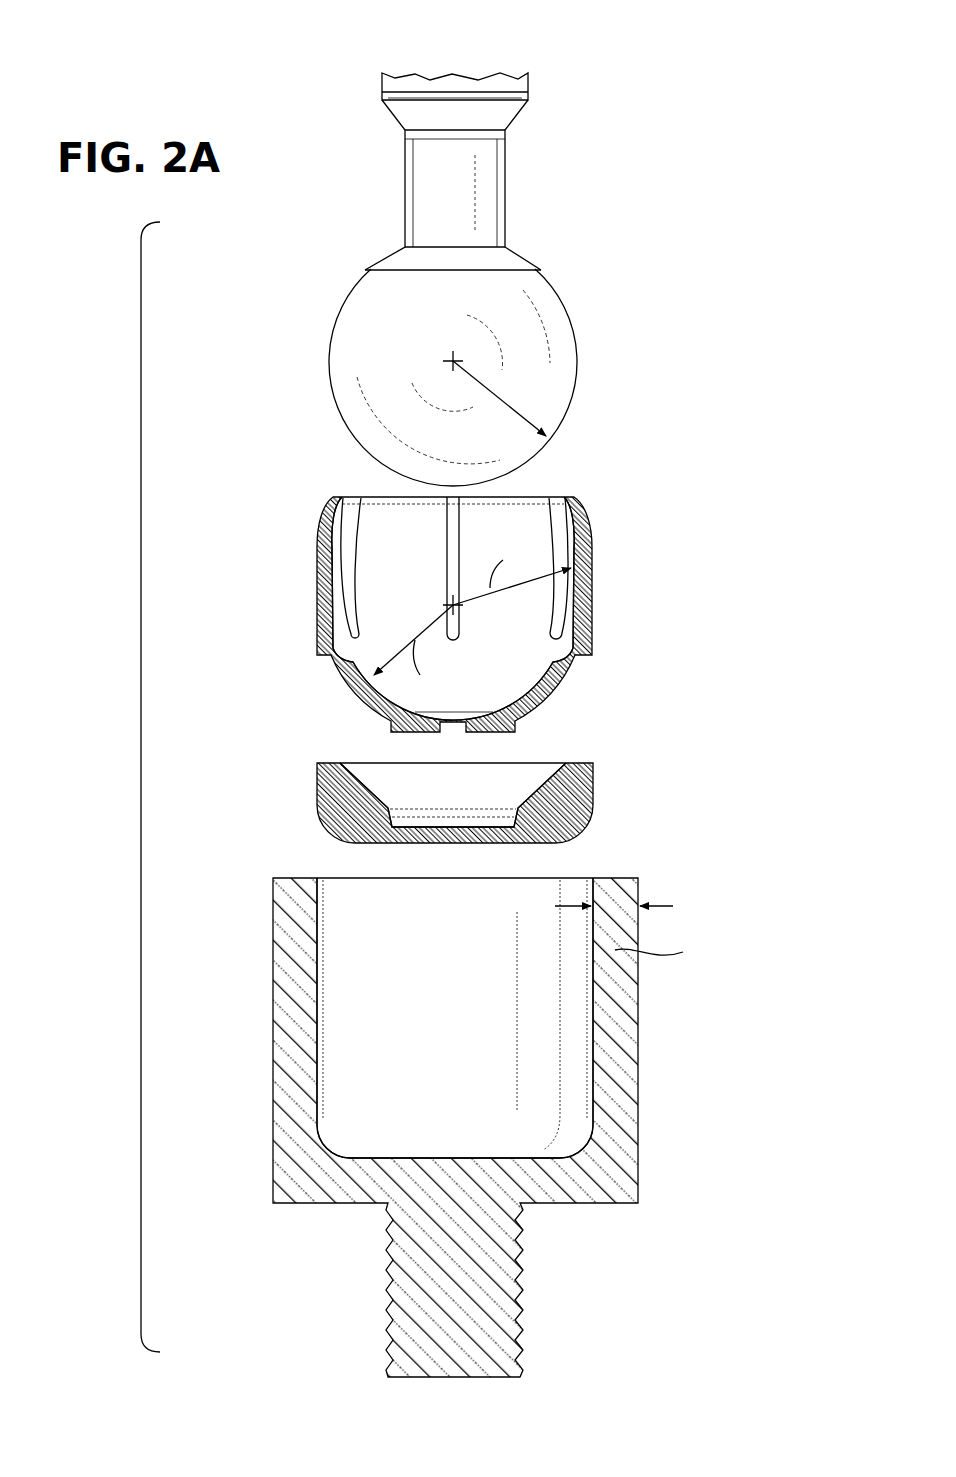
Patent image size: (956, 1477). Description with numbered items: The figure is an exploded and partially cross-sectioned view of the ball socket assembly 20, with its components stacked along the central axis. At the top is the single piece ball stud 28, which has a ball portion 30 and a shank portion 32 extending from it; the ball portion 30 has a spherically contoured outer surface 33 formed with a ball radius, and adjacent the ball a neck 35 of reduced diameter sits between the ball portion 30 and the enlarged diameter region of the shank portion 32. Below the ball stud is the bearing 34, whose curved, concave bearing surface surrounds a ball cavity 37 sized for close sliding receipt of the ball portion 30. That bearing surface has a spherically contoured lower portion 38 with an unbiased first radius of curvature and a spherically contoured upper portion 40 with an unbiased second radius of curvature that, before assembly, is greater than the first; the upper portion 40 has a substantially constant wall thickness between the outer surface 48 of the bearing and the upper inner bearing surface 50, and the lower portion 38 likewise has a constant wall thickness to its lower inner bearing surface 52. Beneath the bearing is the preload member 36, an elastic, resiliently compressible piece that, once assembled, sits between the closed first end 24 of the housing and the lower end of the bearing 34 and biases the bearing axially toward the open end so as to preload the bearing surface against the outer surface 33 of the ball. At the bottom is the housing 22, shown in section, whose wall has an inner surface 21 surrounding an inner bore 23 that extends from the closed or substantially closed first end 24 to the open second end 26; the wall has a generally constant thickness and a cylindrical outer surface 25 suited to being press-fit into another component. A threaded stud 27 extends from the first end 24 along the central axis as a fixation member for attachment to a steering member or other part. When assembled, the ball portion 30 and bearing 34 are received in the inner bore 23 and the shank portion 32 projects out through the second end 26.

The ball socket assembly 20 is at (141, 776).
The inner surface 21 is at (317, 1057).
The housing 22 is at (474, 1095).
The inner bore 23 is at (336, 895).
The first end 24 is at (620, 1205).
The outer surface 25 is at (644, 1005).
The second end 26 is at (612, 878).
The threaded stud 27 is at (520, 1320).
The ball stud 28 is at (445, 245).
The ball portion 30 is at (453, 377).
The shank portion 32 is at (383, 80).
The outer surface 33 is at (471, 358).
The bearing 34 is at (529, 585).
The neck 35 is at (435, 190).
The preload member 36 is at (335, 796).
The ball cavity 37 is at (528, 487).
The lower portion 38 is at (531, 673).
The upper portion 40 is at (343, 577).
The outer surface 48 is at (596, 532).
The upper inner bearing surface 50 is at (560, 545).
The lower inner bearing surface 52 is at (522, 708).